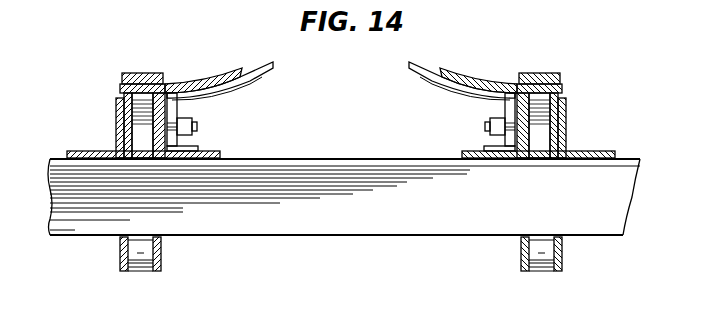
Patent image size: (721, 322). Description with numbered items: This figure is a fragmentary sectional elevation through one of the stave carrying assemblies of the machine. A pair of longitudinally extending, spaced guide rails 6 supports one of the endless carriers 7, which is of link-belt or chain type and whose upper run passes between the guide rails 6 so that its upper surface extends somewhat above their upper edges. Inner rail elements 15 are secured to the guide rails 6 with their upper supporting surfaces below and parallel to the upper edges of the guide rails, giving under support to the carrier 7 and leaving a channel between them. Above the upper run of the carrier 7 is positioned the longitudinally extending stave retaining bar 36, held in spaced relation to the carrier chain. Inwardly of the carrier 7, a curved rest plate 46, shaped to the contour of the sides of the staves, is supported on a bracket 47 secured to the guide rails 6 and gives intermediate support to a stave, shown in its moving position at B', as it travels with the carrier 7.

The stave retaining bar 36 is at (132, 73).
The moving position of the stave B' is at (181, 67).
The rest plate 46 is at (258, 67).
The bracket 47 is at (234, 88).
The endless carrier 7 is at (121, 104).
The guide rail 6 is at (122, 117).
The inner rail element 15 is at (122, 138).